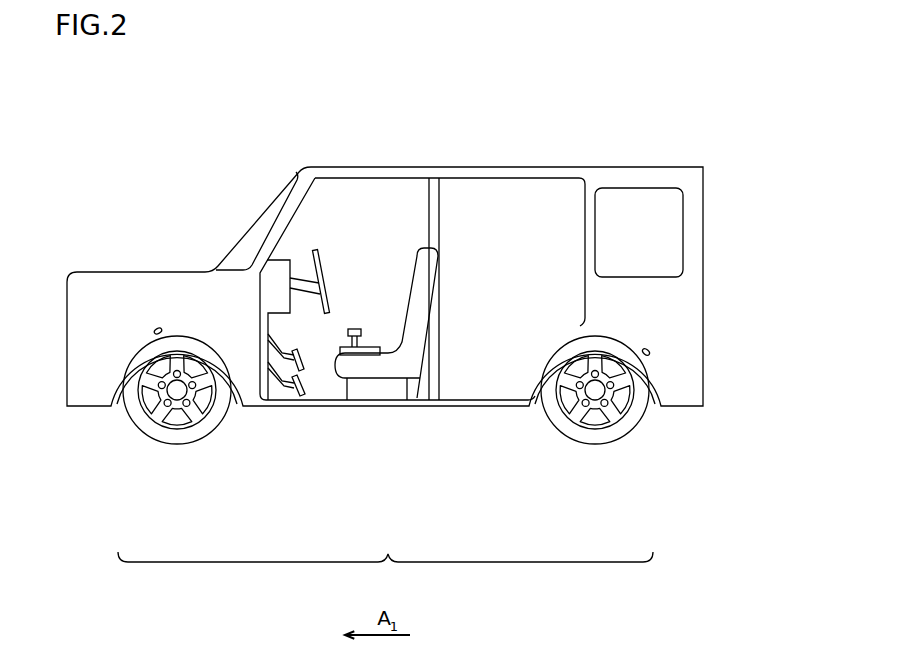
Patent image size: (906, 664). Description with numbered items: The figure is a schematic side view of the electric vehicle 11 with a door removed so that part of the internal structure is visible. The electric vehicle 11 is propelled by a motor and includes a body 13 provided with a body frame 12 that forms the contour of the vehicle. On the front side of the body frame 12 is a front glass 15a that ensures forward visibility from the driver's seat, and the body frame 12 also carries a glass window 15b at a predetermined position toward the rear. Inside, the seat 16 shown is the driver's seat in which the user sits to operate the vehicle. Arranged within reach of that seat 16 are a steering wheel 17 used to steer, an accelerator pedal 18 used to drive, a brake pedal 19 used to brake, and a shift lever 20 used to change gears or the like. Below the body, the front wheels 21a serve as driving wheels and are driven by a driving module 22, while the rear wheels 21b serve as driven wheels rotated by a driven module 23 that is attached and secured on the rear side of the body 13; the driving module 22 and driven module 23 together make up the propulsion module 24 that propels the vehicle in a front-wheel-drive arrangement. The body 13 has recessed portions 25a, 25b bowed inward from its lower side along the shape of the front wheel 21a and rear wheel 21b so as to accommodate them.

The electric vehicle 11 is at (563, 75).
The body frame 12 is at (690, 300).
The body 13 is at (654, 132).
The front glass 15a is at (259, 236).
The glass window 15b is at (662, 232).
The seat 16 is at (387, 370).
The steering wheel 17 is at (322, 252).
The accelerator pedal 18 is at (287, 390).
The brake pedal 19 is at (305, 363).
The shift lever 20 is at (353, 328).
The front wheels 21a is at (178, 438).
The rear wheels 21b is at (593, 437).
The driving module 22 is at (218, 458).
The driven module 23 is at (563, 460).
The propulsion module 24 is at (385, 572).
The recessed portion 25a is at (157, 331).
The recessed portion 25b is at (648, 355).